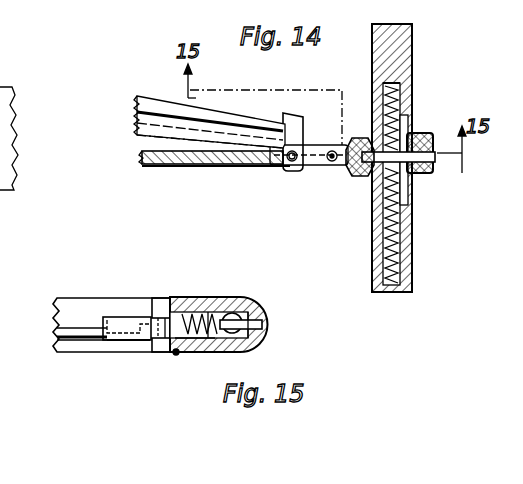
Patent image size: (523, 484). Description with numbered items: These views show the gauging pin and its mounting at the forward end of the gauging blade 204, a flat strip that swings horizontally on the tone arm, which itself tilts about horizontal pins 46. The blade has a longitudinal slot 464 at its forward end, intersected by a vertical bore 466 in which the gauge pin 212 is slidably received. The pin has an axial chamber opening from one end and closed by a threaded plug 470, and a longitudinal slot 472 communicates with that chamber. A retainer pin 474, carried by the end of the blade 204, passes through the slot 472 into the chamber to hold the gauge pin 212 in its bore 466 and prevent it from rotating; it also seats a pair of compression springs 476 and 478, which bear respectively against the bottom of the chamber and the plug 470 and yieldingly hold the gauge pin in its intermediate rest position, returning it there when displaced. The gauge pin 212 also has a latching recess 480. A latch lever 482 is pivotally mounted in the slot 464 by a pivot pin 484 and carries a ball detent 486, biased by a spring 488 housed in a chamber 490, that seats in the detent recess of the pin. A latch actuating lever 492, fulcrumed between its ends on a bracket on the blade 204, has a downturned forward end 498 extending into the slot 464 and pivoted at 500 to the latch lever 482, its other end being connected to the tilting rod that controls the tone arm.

In FIG. 14, the horizontal trunnions or pins 46 is at (410, 95).
In FIG. 14, the gauging blade 204 is at (160, 167).
In FIG. 15, the gauging blade 204 is at (75, 306).
In FIG. 14, the gauge pin 212 is at (412, 38).
In FIG. 15, the gauge pin 212 is at (257, 343).
In FIG. 14, the longitudinal slot 464 is at (262, 165).
In FIG. 15, the longitudinal slot 464 is at (142, 341).
In FIG. 15, the vertical bore 466 is at (247, 318).
In FIG. 14, the threaded plug 470 is at (398, 289).
In FIG. 14, the longitudinal slot 472 is at (412, 124).
In FIG. 15, the longitudinal slot 472 is at (267, 330).
In FIG. 14, the retainer pin 474 is at (417, 170).
In FIG. 15, the retainer pin 474 is at (265, 317).
In FIG. 14, the compression spring 476 is at (380, 95).
In FIG. 14, the compression spring 478 is at (384, 232).
In FIG. 14, the latching recess 480 is at (376, 138).
In FIG. 15, the latching recess 480 is at (208, 316).
In FIG. 15, the latch lever 482 is at (145, 318).
In FIG. 14, the pivot pin 484 is at (333, 163).
In FIG. 15, the pivot pin 484 is at (177, 354).
In FIG. 14, the ball detent 486 is at (364, 178).
In FIG. 15, the ball detent 486 is at (190, 308).
In FIG. 15, the spring 488 is at (179, 310).
In FIG. 15, the chamber 490 is at (203, 348).
In FIG. 14, the latch actuating lever 492 is at (232, 112).
In FIG. 15, the latch actuating lever 492 is at (73, 338).
In FIG. 14, the downturned forward end 498 is at (302, 130).
In FIG. 14, the pivot 500 is at (284, 168).